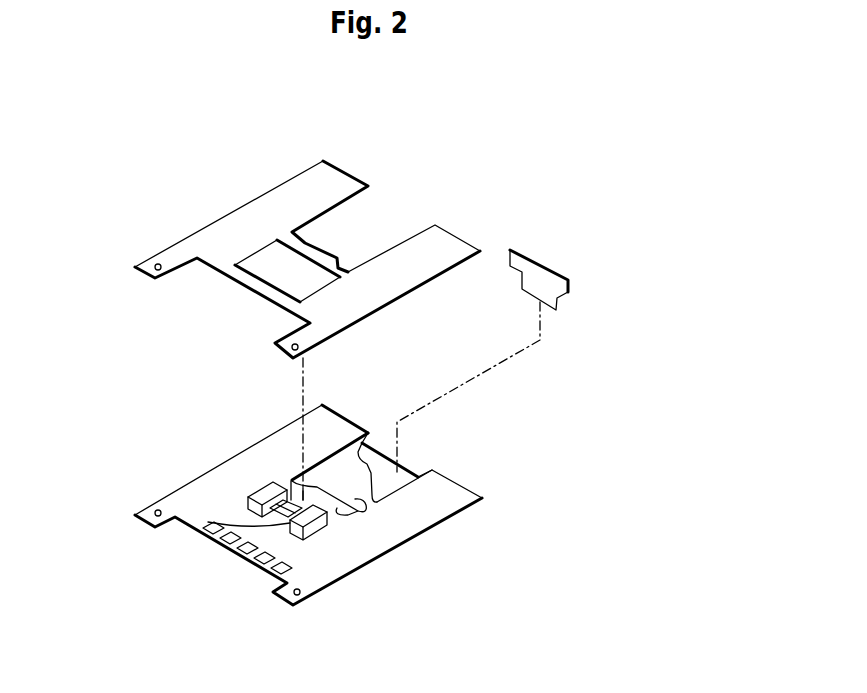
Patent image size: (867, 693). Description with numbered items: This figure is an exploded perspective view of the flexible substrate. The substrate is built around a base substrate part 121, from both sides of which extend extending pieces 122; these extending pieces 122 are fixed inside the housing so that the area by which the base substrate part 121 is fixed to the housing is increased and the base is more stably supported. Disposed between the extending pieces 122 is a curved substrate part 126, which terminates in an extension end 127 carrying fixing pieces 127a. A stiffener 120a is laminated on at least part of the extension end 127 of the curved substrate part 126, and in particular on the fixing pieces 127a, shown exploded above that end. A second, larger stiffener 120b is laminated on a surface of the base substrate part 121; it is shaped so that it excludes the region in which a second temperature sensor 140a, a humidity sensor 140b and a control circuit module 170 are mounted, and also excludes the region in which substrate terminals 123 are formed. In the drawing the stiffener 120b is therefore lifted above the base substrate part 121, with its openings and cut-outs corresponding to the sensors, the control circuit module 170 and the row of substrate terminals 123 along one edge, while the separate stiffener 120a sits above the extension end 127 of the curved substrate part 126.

The stiffener 120b is at (332, 188).
The stiffener 120a is at (547, 277).
The base substrate part 121 is at (333, 573).
The extending pieces 122 is at (452, 500).
The substrate terminals 123 is at (230, 548).
The curved substrate part 126 is at (375, 502).
The extension end 127 is at (390, 472).
The fixing pieces 127a is at (368, 445).
The second temperature sensor 140a is at (208, 522).
The humidity sensor 140b is at (290, 487).
The control circuit module 170 is at (262, 487).